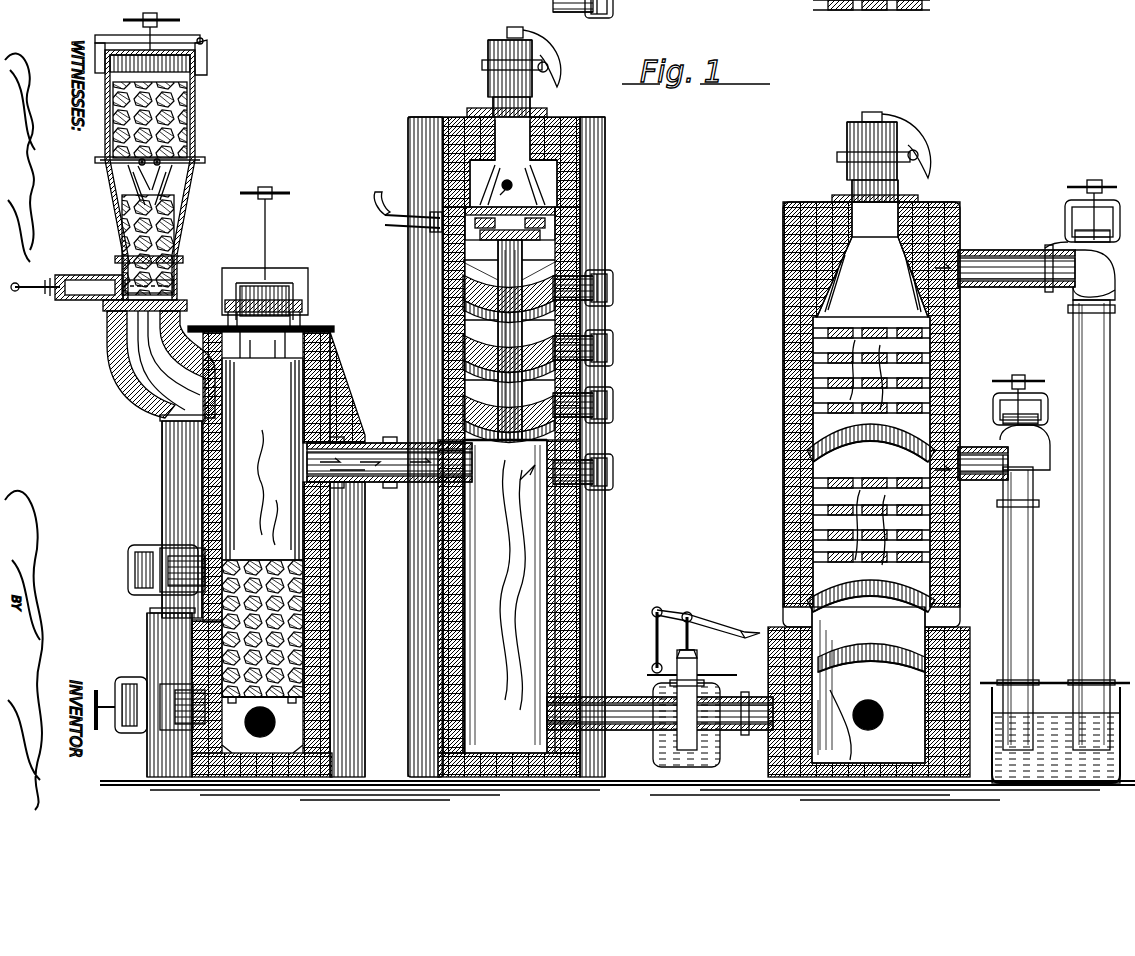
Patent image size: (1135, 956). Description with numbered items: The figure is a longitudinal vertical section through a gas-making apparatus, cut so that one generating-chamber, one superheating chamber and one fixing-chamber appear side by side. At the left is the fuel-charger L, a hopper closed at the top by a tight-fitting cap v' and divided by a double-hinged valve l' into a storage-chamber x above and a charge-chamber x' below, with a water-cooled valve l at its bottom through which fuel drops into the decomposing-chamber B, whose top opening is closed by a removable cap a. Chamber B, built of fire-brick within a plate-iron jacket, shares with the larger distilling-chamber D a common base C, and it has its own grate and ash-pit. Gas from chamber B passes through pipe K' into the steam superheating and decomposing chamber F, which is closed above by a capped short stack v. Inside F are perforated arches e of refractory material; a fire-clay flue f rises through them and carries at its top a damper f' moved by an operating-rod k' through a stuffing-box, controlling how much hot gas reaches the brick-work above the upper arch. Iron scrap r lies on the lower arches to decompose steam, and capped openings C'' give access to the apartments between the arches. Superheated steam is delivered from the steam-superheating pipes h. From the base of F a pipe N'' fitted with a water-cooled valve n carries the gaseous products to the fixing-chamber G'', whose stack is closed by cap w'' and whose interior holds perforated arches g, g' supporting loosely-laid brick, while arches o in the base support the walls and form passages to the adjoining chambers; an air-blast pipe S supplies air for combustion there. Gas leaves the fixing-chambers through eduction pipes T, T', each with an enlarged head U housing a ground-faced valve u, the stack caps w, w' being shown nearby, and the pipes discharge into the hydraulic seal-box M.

The fuel-charger L is at (122, 222).
The tight-fitting cap v' is at (165, 44).
The storage-chamber x is at (162, 120).
The double-hinged valve l' is at (157, 150).
The charge-chamber x' is at (163, 230).
The water-cooled valve l is at (97, 276).
The removable cap a is at (270, 285).
The decomposing-chamber B is at (270, 432).
The distilling-chamber D is at (160, 506).
The common base C is at (161, 692).
The air-blast pipe S is at (166, 559).
The pipe K' is at (389, 452).
The purifier F' is at (495, 442).
The tight-fitting cap v is at (516, 72).
The steam-superheating pipes h is at (509, 180).
The operating-rod k' is at (408, 222).
The perforated arches e is at (509, 351).
The damper f' is at (509, 289).
The fire-clay tube or flue f is at (509, 349).
The metal scrap r is at (509, 409).
The openings C'' is at (597, 245).
The steam superheating and decomposing chamber F is at (505, 596).
The pipe N'' is at (692, 644).
The water-cooled valve n is at (686, 715).
The fixing-chamber G'' is at (864, 388).
The tight-fitting cap w'' is at (876, 174).
The perforated arch g' is at (871, 462).
The perforated arch g is at (871, 610).
The arches o is at (871, 702).
The tight-fitting cap w is at (1025, 272).
The tight-fitting cap w' is at (1092, 211).
The enlarged heads U is at (1068, 252).
The valve u is at (990, 427).
The gas-eduction pipe T is at (1008, 608).
The gas-eduction pipe T' is at (1082, 525).
The hydraulic seal-box M is at (1055, 733).